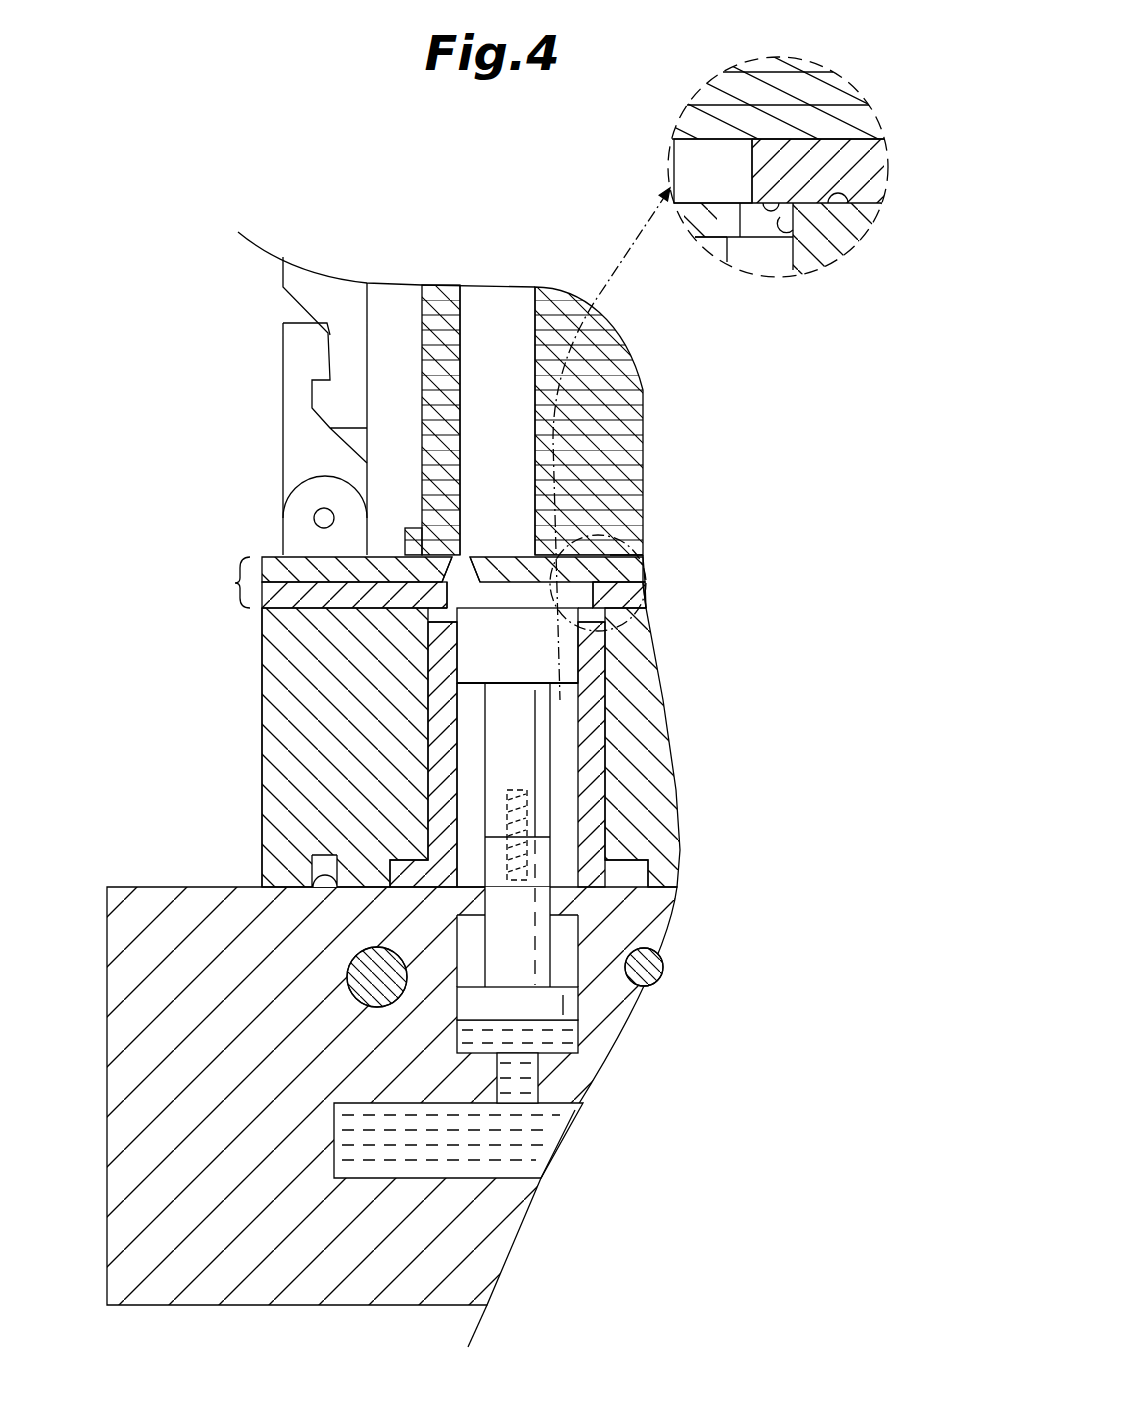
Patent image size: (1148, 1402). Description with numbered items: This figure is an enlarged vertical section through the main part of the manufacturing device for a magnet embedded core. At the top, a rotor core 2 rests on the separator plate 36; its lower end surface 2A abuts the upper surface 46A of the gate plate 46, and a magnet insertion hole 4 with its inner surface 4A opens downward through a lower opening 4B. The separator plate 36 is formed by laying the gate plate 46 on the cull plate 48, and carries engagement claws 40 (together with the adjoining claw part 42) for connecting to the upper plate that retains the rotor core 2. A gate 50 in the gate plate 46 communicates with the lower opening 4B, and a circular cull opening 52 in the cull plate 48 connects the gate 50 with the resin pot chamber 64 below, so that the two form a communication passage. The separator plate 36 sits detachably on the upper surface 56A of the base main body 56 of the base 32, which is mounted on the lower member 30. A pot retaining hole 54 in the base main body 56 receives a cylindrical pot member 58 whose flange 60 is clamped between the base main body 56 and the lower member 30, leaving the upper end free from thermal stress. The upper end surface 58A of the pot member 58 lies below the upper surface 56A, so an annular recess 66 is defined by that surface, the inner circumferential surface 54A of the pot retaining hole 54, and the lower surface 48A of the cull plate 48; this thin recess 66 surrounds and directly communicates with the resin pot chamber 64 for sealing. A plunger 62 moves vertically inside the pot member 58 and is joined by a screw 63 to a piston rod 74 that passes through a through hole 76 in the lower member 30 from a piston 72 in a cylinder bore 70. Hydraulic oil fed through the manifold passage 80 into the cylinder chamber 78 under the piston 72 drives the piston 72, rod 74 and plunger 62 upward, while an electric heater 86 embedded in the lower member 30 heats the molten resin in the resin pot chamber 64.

The rotor core 2 is at (612, 390).
The lower end surface 2A is at (643, 565).
The magnet insertion hole 4 is at (485, 421).
The inner surface 4A is at (520, 330).
The lower opening 4B is at (516, 632).
The lower member 30 is at (130, 936).
The base 32 is at (262, 805).
The separator plate 36 is at (420, 582).
The engagement claw 40 is at (290, 384).
The bracket hook 42 is at (292, 276).
The gate plate 46 is at (615, 545).
The upper surface 46A is at (612, 522).
The cull plate 48 is at (630, 602).
The lower surface 48A is at (783, 202).
The gate 50 is at (468, 565).
The cull opening 52 is at (540, 640).
The pot retaining hole 54 is at (610, 812).
The inner circumferential surface 54A is at (710, 250).
The base main body 56 is at (285, 725).
The upper surface 56A is at (635, 583).
The pot member 58 is at (596, 712).
The upper end surface 58A is at (740, 233).
The flange 60 is at (633, 873).
The plunger 62 is at (470, 658).
The screw 63 is at (522, 797).
The resin pot chamber 64 is at (710, 245).
The annular recess 66 is at (613, 607).
The cylinder bore 70 is at (575, 957).
The piston 72 is at (573, 1010).
The piston rod 74 is at (540, 940).
The through hole 76 is at (487, 907).
The cylinder chamber 78 is at (563, 1040).
The manifold passage 80 is at (381, 1166).
The electric heater 86 is at (360, 975).